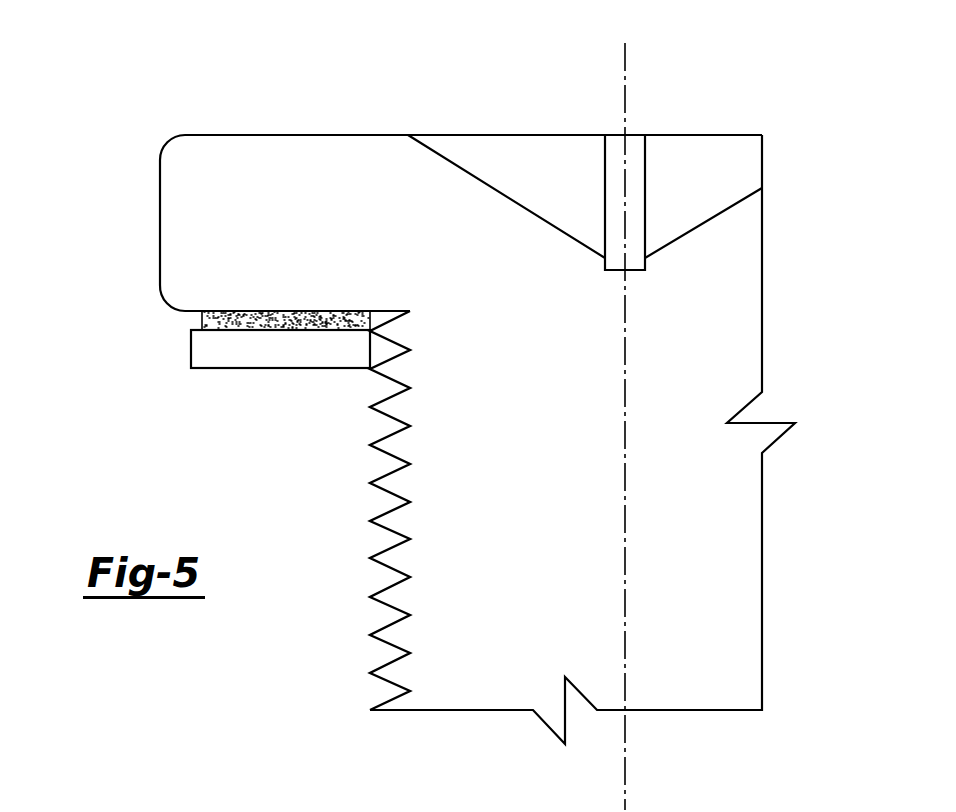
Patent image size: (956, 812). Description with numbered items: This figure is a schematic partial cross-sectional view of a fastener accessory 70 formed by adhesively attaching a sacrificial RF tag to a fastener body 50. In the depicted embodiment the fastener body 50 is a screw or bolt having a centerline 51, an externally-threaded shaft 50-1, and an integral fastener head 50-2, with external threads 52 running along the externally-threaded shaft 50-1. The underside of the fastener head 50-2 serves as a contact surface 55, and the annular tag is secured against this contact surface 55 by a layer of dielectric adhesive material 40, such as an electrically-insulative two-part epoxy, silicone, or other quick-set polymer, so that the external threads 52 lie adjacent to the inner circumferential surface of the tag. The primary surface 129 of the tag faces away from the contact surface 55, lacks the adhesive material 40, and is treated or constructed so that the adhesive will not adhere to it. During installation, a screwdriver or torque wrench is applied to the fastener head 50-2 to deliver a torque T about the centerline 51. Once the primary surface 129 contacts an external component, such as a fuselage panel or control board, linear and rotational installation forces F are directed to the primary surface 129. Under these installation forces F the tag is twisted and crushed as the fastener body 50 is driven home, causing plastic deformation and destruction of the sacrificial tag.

The fastener body 50 is at (769, 64).
The externally-threaded shaft 50-1 is at (509, 471).
The fastener head 50-2 is at (228, 167).
The centerline 51 is at (625, 793).
The external threads 52 is at (403, 527).
The contact surface 55 is at (171, 318).
The fastener accessory 70 is at (110, 301).
The dielectric adhesive material 40 is at (225, 318).
The primary surface 129 is at (280, 368).
The installation forces F is at (325, 380).
The torque T is at (613, 25).